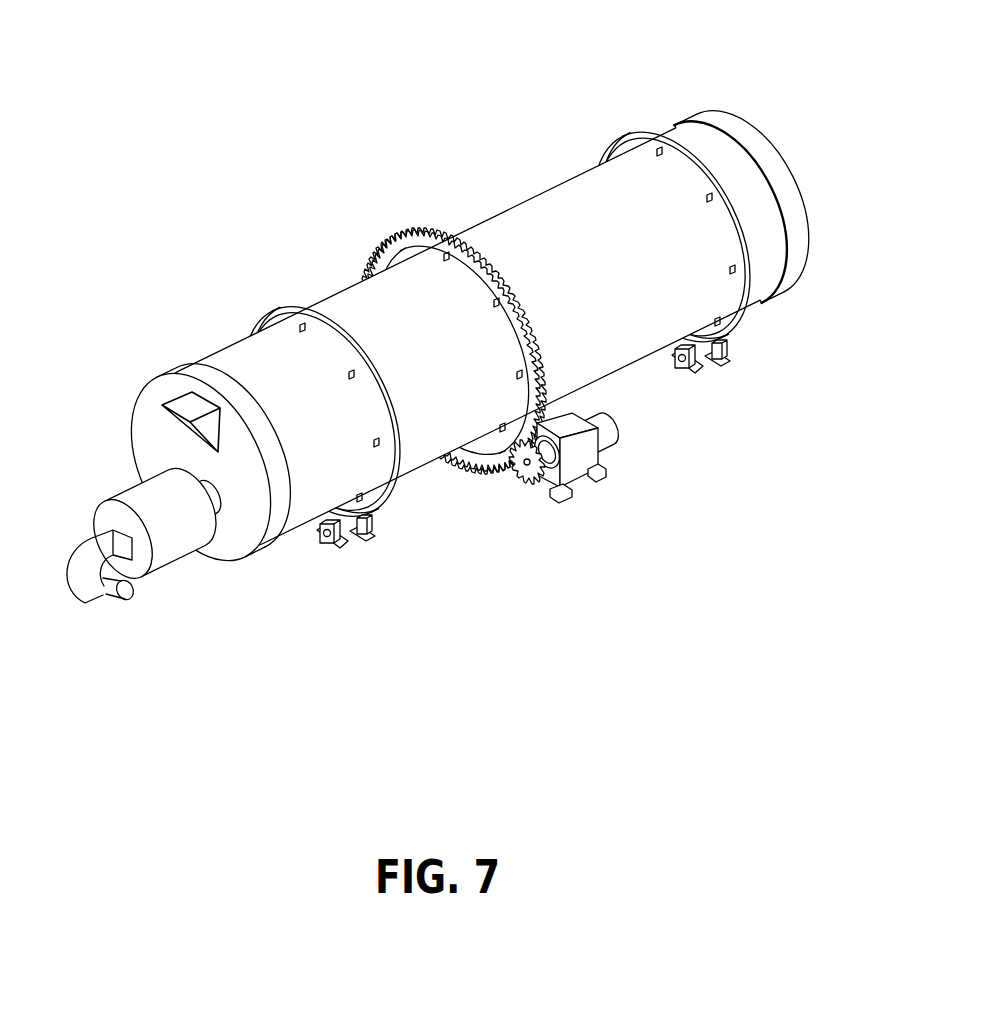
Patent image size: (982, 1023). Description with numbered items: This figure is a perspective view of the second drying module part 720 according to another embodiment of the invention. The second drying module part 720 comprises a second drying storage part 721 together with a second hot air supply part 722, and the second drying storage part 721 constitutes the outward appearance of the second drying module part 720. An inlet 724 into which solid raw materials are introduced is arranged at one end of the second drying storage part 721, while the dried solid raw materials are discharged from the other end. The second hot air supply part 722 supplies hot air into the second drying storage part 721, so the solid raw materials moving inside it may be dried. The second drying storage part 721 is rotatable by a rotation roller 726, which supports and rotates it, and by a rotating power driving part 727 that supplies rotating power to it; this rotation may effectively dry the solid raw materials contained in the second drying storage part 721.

The second drying module part 720 is at (438, 321).
The second drying storage part 721 is at (456, 347).
The second hot air supply part 722 is at (170, 545).
The inlet 724 is at (182, 401).
The rotation roller 726 is at (352, 528).
The rotating power driving part 727 is at (610, 430).